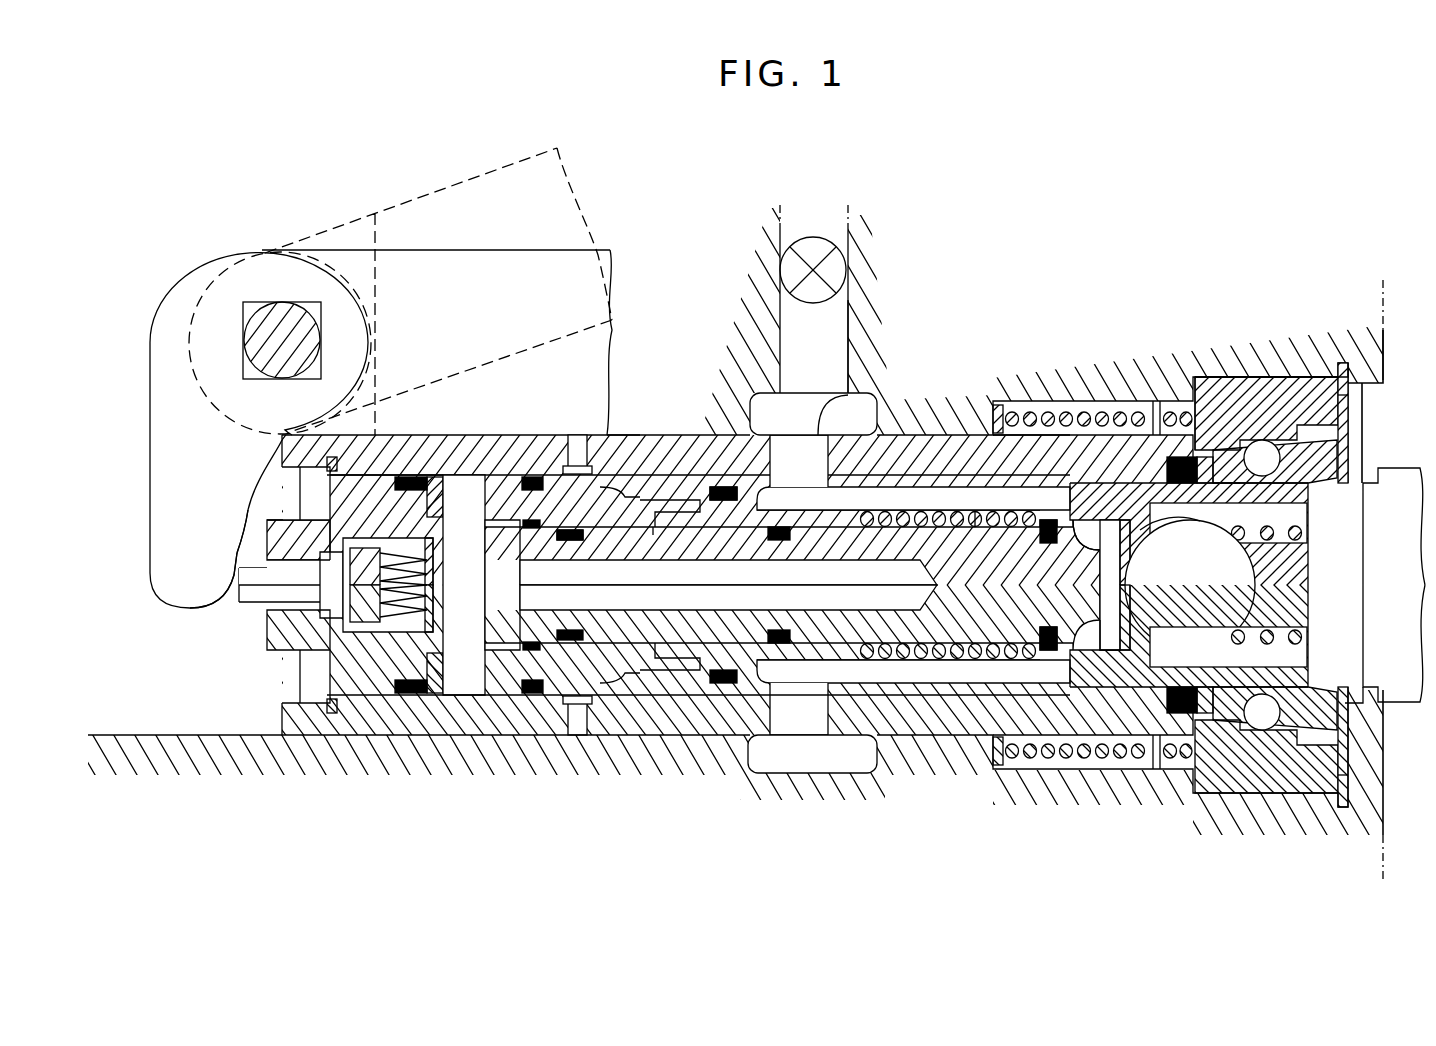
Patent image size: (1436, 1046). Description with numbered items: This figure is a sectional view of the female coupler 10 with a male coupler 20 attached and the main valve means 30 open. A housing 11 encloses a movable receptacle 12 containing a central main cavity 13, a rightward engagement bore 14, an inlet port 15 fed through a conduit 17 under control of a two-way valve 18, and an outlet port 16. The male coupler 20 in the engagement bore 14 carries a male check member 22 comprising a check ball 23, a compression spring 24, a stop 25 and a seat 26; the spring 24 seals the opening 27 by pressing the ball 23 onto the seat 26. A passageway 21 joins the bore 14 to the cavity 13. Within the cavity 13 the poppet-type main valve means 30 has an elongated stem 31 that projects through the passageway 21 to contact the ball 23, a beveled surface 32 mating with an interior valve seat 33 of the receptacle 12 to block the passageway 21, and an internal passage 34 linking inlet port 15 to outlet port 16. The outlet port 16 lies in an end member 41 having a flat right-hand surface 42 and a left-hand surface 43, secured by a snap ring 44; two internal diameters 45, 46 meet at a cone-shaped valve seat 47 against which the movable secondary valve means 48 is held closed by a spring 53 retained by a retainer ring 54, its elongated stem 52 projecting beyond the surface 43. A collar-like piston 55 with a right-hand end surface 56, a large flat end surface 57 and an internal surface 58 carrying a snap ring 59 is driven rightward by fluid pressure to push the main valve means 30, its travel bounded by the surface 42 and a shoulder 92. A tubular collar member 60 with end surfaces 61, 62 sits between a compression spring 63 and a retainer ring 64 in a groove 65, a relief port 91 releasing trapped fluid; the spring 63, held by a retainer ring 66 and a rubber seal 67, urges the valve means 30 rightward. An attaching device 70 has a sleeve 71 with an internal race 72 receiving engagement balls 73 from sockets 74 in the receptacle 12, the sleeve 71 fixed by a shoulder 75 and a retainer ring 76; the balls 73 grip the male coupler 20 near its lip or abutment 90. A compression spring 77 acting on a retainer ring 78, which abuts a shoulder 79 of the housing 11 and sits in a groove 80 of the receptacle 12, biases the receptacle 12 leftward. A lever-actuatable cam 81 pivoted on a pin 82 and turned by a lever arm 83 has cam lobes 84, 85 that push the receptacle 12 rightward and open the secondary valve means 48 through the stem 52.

The female coupler 10 is at (1256, 226).
The housing 11 is at (1385, 325).
The movable receptacle 12 is at (670, 440).
The main cavity 13 is at (858, 494).
The engagement bore 14 is at (1155, 402).
The inlet port 15 is at (850, 400).
The outlet port 16 is at (237, 578).
The conduit 17 is at (850, 338).
The valve 18 is at (830, 264).
The male coupler 20 is at (1398, 488).
The passageway 21 is at (1115, 523).
The male check member 22 is at (1350, 682).
The check ball 23 is at (1170, 584).
The compression spring 24 is at (1288, 645).
The stop 25 is at (1262, 584).
The seat 26 is at (1112, 530).
The opening 27 is at (1142, 530).
The movable main valve means 30 is at (950, 535).
The elongated stem 31 is at (1097, 590).
The beveled surface 32 is at (1075, 665).
The interior valve seat 33 is at (1093, 660).
The passage 34 is at (828, 632).
The end member 41 is at (405, 462).
The flat right-hand surface 42 is at (444, 494).
The left-hand surface 43 is at (268, 562).
The snap ring 44 is at (330, 474).
The internal diameter 45 is at (390, 546).
The internal diameter 46 is at (268, 575).
The valve seat 47 is at (343, 544).
The movable secondary valve means 48 is at (288, 610).
The elongated stem 52 is at (245, 598).
The spring 53 is at (412, 553).
The retainer ring 54 is at (437, 533).
The movable piston 55 is at (505, 480).
The right-hand end surface 56 is at (792, 547).
The large flat end surface 57 is at (472, 522).
The internal surface 58 is at (508, 530).
The snap ring 59 is at (548, 524).
The collar member 60 is at (742, 494).
The right-hand end surface 61 is at (864, 516).
The left-hand end surface 62 is at (650, 532).
The compression spring 63 is at (975, 510).
The retainer ring 64 is at (653, 530).
The groove 65 is at (676, 488).
The retainer ring 66 is at (1048, 528).
The rubber seal 67 is at (1050, 518).
The attaching device 70 is at (1250, 338).
The sleeve 71 is at (1280, 378).
The internal race 72 is at (1341, 412).
The engagement balls 73 is at (1266, 448).
The sockets 74 is at (1215, 452).
The shoulder 75 is at (1193, 385).
The retainer ring 76 is at (1384, 385).
The compression spring 77 is at (1030, 418).
The retainer ring 78 is at (1008, 468).
The shoulder 79 is at (993, 410).
The groove 80 is at (1010, 446).
The lever-actuatable cam 81 is at (170, 455).
The pin 82 is at (282, 335).
The lever arm 83 is at (605, 250).
The cam lobe 84 is at (288, 470).
The cam lobe 85 is at (233, 575).
The lip or abutment 90 is at (1218, 470).
The relief port 91 is at (614, 432).
The shoulder 92 is at (568, 440).